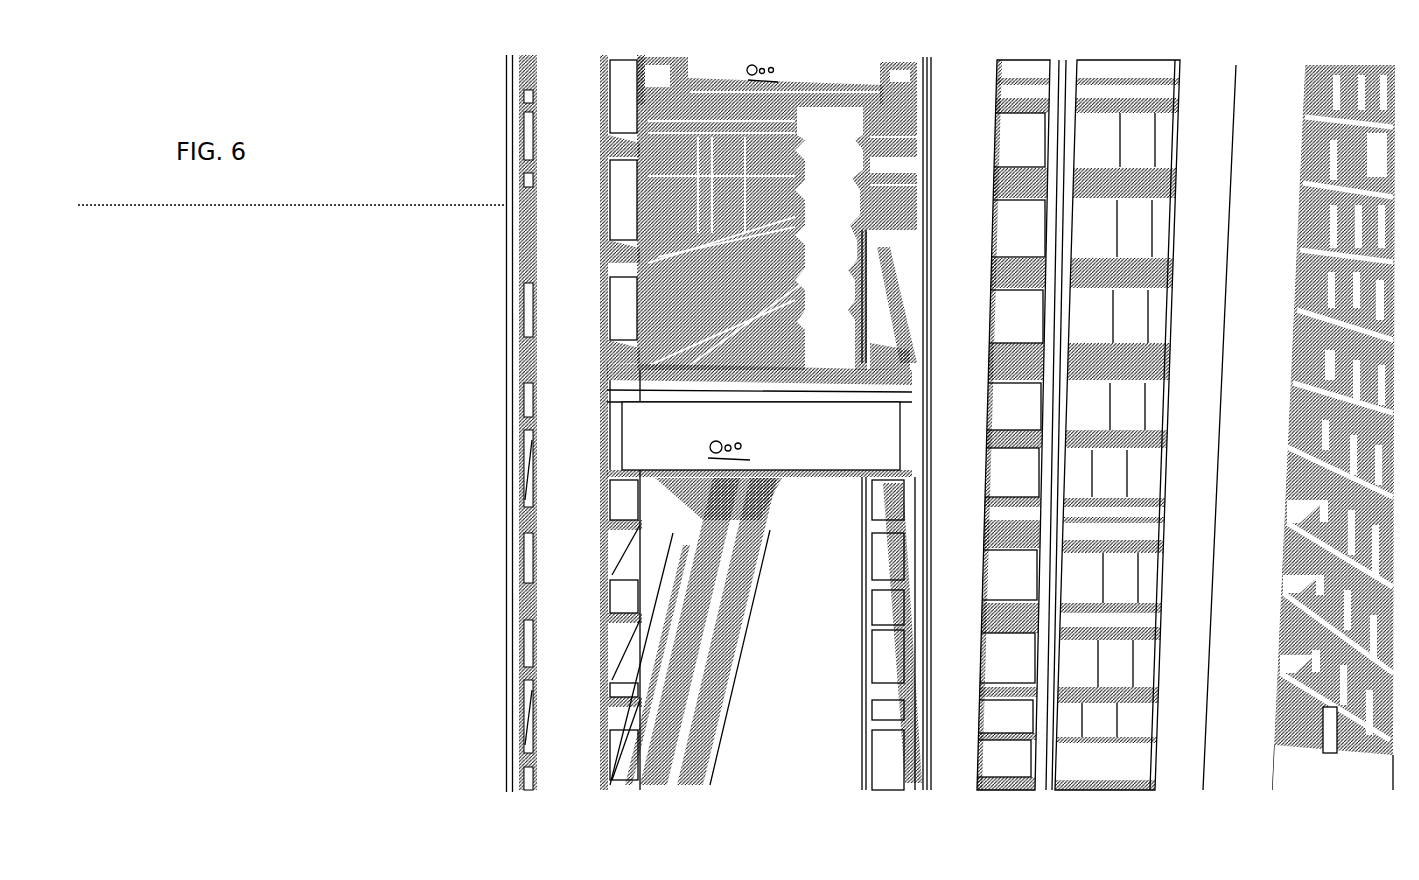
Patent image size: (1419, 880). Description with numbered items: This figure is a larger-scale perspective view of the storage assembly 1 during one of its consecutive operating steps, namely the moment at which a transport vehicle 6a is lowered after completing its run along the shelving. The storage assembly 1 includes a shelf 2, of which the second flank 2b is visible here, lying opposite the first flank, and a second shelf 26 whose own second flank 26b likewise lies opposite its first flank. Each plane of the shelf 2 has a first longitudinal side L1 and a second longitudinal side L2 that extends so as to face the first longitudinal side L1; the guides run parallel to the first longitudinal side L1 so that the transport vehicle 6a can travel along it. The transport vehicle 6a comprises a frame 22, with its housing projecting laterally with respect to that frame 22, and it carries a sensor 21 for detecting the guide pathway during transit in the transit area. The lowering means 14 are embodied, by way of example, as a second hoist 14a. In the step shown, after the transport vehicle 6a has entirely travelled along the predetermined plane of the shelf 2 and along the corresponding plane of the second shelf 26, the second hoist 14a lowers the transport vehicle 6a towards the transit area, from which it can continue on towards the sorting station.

The storage assembly 1 is at (462, 300).
The shelf 2 is at (497, 445).
The second flank 2b is at (495, 538).
The second shelf 26 is at (945, 93).
The second flank 26b is at (490, 590).
The lowering means 14 is at (640, 722).
The second hoist 14a is at (640, 660).
The frame 22 is at (650, 415).
The transport vehicle 6a is at (793, 447).
The sensor 21 is at (760, 537).
The first longitudinal side L1 is at (760, 64).
The second longitudinal side L2 is at (898, 69).